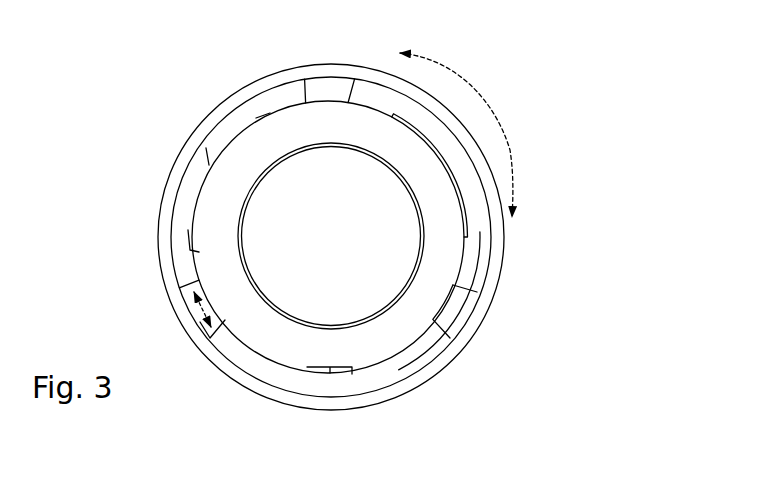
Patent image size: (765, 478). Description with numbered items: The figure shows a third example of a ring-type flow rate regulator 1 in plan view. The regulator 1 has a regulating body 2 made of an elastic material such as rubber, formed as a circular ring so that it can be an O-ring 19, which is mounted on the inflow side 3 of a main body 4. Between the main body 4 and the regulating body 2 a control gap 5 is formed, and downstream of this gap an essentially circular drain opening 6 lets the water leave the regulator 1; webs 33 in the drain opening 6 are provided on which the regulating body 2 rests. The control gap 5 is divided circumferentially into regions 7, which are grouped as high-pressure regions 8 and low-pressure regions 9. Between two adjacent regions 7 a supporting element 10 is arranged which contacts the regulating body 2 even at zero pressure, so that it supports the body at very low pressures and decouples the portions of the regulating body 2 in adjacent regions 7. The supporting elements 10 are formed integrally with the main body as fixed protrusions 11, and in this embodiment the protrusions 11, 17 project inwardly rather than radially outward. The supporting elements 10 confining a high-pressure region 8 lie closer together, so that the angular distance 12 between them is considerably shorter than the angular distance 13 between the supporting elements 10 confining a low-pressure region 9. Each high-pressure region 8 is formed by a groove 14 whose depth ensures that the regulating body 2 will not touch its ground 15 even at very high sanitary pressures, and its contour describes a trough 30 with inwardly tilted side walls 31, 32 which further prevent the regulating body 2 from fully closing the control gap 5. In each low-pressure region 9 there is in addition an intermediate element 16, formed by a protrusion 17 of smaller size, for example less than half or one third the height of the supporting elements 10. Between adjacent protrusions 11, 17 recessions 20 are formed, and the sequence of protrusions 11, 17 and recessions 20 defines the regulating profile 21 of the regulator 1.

The flow rate regulator 1 is at (576, 197).
The regulating body 2 is at (228, 212).
The inflow side 3 is at (394, 366).
The main body 4 is at (373, 221).
The control gap 5 is at (240, 132).
The drain opening 6 is at (463, 202).
The regions 7 is at (333, 80).
The high-pressure regions 8 is at (98, 282).
The low-pressure regions 9 is at (186, 219).
The supporting element 10 is at (293, 101).
The fixed protrusions 11 is at (274, 95).
The distance 12 is at (203, 312).
The distance 13 is at (500, 123).
The groove 14 is at (316, 84).
The ground 15 is at (468, 320).
The intermediate element 16 is at (208, 153).
The protrusion 17 is at (206, 167).
The O-rings 19 is at (291, 144).
The recessions 20 is at (186, 238).
The regulating profile 21 is at (409, 112).
The trough 30 is at (428, 126).
The tilted side wall 31 is at (393, 112).
The tilted side wall 32 is at (466, 247).
The webs 33 is at (203, 185).